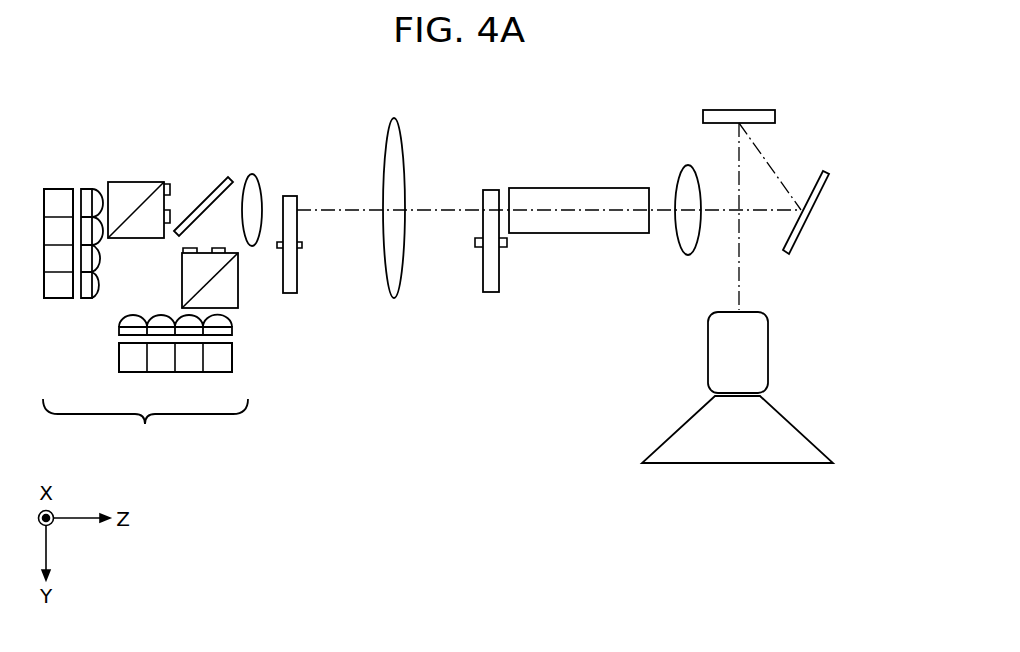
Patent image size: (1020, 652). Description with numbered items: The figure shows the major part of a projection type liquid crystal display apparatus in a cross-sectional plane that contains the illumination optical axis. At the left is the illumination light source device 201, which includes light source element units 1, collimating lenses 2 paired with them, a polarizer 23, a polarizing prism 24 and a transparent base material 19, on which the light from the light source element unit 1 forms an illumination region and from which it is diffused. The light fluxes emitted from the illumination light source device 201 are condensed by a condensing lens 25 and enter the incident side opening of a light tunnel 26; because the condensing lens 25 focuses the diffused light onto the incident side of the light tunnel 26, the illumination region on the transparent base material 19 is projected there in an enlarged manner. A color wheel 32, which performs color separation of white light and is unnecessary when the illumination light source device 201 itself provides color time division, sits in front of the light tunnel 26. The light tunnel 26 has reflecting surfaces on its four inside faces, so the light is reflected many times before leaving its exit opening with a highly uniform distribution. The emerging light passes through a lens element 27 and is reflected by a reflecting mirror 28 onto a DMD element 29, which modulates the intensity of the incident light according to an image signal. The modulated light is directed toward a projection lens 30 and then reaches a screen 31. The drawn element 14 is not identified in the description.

The light source element unit 1 is at (61, 188).
The collimating lens 2 is at (92, 188).
The condensing lens 14 is at (252, 175).
The transparent base material 19 is at (290, 196).
The polarizer 23 is at (211, 192).
The polarizing prism 24 is at (139, 182).
The condensing lens 25 is at (394, 118).
The light tunnel 26 is at (580, 188).
The lens element 27 is at (683, 167).
The reflecting mirror 28 is at (818, 198).
The DMD element 29 is at (740, 110).
The projection lens 30 is at (768, 352).
The screen 31 is at (797, 427).
The color wheel 32 is at (490, 190).
The illumination light source device 201 is at (145, 427).